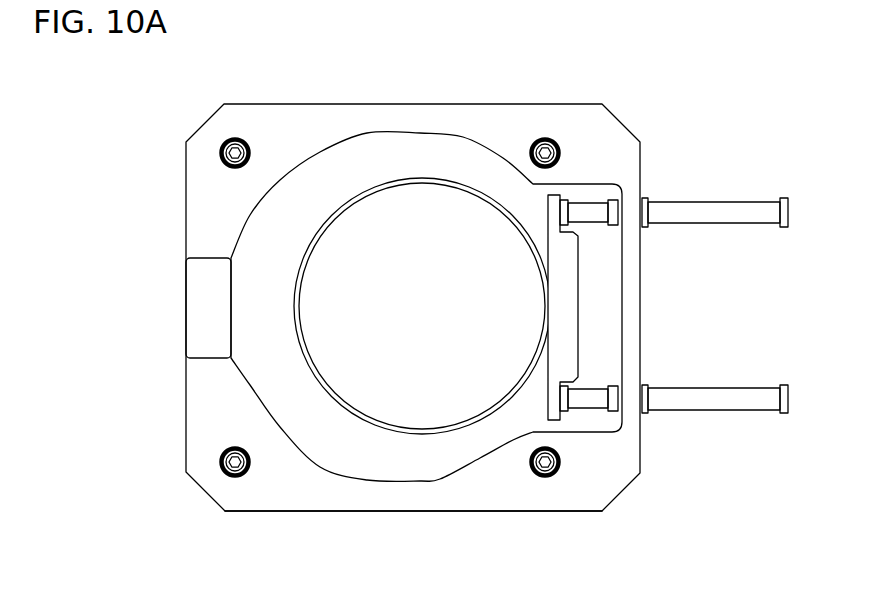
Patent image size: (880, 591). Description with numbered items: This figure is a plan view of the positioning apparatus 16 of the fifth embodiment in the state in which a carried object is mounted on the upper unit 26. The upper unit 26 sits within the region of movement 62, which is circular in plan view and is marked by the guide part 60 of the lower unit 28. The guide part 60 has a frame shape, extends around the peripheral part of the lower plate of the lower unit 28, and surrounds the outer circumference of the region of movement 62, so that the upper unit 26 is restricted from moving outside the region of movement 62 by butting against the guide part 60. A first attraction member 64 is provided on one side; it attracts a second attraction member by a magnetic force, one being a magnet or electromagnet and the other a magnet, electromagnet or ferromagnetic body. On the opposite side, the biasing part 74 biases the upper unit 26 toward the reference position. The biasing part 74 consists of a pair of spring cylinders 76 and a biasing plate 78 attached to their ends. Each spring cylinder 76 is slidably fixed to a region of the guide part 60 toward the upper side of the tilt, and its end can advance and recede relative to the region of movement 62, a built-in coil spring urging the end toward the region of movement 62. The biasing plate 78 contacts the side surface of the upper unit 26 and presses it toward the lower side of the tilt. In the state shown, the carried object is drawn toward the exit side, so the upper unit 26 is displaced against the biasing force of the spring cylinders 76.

The positioning apparatus 16 is at (664, 100).
The upper unit 26 is at (411, 202).
The lower unit 28 is at (583, 516).
The guide part 60 is at (613, 482).
The region of movement 62 is at (405, 463).
The first attraction member 64 is at (202, 307).
The biasing part 74 is at (705, 421).
The spring cylinder 76 is at (676, 225).
The biasing plate 78 is at (580, 302).